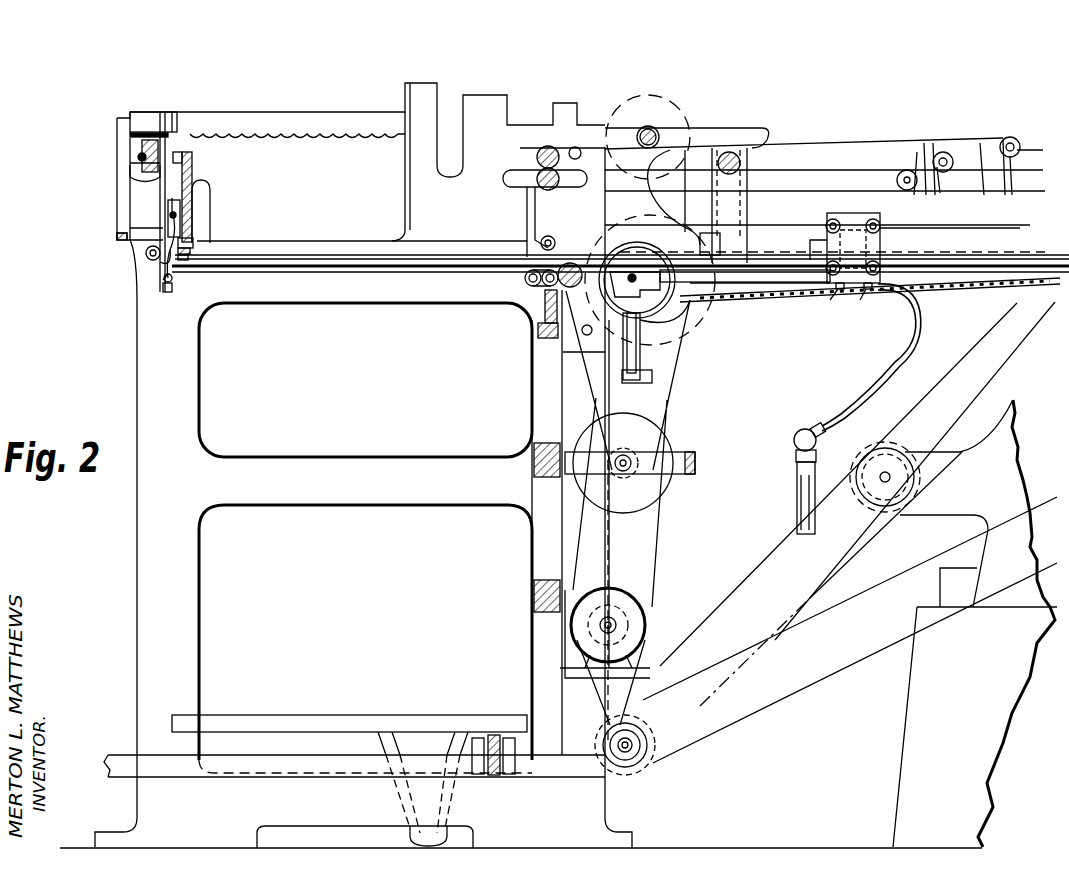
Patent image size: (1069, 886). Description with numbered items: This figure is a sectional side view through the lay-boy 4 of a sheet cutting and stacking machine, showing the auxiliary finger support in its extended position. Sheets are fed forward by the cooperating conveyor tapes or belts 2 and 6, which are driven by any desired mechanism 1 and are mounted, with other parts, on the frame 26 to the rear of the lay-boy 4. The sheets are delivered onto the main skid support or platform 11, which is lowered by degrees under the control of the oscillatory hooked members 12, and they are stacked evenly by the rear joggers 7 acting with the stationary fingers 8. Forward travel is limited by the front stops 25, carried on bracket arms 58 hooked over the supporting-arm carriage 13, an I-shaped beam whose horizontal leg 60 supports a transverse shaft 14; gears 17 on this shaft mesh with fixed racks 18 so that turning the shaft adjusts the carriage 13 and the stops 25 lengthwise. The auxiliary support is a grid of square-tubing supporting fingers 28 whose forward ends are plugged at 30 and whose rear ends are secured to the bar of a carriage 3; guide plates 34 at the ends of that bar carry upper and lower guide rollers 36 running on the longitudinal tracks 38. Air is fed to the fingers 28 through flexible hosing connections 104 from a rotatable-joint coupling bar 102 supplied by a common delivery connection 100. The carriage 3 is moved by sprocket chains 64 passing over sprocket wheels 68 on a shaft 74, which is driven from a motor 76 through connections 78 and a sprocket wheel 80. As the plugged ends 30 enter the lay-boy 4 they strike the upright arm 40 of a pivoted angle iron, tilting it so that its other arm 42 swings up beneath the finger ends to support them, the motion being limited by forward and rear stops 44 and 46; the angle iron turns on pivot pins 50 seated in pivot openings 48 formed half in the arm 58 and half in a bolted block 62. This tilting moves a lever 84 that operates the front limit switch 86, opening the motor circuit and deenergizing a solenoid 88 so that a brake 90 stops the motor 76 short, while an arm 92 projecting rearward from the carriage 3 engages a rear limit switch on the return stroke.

The mechanism 1 is at (797, 673).
The conveyor tapes or belts 2 is at (805, 195).
The carriage 3 is at (868, 292).
The lay-boy 4 is at (220, 402).
The conveyor tapes or belts 6 is at (818, 148).
The rear joggers 7 is at (530, 180).
The stationary fingers 8 is at (527, 190).
The main skid support or platform 11 is at (412, 722).
The oscillatory hooked members 12 is at (528, 215).
The supporting-arm carriage 13 is at (185, 130).
The shaft 14 is at (138, 158).
The gears 17 is at (128, 152).
The racks 18 is at (312, 128).
The front stops 25 is at (192, 160).
The frame 26 is at (960, 462).
The supporting fingers 28 is at (333, 257).
The plugged forward ends 30 is at (200, 250).
The guide plates 34 is at (838, 292).
The guide rollers 36 is at (826, 225).
The tracks 38 is at (950, 262).
The upper arm 40 is at (160, 264).
The horizontally disposed arm 42 is at (185, 260).
The forward stop 44 is at (178, 240).
The rear stop 46 is at (146, 253).
The pivot openings 48 is at (163, 280).
The pivot pins 50 is at (172, 290).
The bracket arms 58 is at (163, 216).
The horizontal leg 60 is at (130, 175).
The block 62 is at (177, 276).
The sprocket chains 64 is at (810, 262).
The sprocket wheels 68 is at (540, 332).
The shaft 74 is at (715, 282).
The motor 76 is at (640, 615).
The connections 78 is at (662, 405).
The sprocket wheel 80 is at (690, 300).
The lever 84 is at (118, 236).
The front limit switch 86 is at (196, 210).
The solenoid 88 is at (570, 380).
The brake 90 is at (670, 340).
The arm 92 is at (860, 213).
The common delivery connection 100 is at (798, 500).
The rotatable-joint coupling bar 102 is at (798, 440).
The flexible hosing connections 104 is at (917, 337).